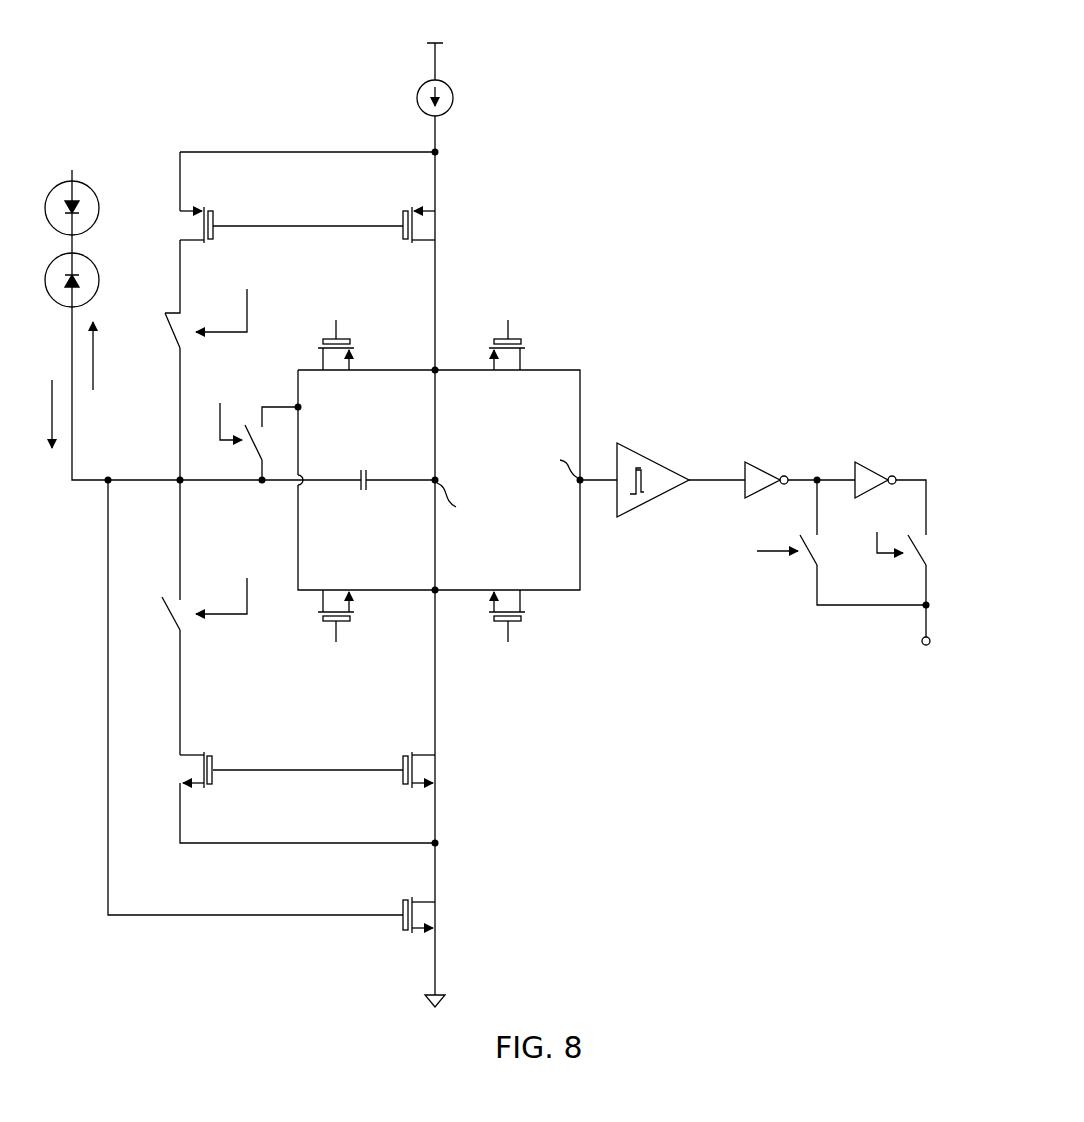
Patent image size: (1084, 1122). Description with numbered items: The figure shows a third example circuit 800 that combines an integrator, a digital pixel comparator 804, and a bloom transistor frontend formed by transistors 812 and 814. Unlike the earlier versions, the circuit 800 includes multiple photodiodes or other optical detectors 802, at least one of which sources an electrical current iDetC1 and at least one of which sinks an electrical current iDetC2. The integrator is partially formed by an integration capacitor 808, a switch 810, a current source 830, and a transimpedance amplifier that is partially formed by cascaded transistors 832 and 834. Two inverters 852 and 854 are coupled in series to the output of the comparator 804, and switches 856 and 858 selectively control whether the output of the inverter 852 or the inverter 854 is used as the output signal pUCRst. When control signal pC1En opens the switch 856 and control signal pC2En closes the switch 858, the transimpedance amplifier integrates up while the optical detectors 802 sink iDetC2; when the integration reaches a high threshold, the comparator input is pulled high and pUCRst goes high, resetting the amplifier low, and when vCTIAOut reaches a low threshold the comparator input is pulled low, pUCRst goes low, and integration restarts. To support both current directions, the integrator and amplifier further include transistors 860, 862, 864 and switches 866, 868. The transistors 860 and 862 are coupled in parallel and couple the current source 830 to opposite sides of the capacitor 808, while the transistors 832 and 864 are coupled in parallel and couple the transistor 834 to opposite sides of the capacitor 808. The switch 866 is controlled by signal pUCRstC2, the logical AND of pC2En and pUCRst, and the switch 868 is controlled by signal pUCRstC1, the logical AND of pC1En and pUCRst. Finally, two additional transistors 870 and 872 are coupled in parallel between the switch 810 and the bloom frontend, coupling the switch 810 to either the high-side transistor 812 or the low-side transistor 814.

The circuit 800 is at (814, 239).
The optical detectors 802 is at (86, 168).
The digital pixel comparator 804 is at (650, 456).
The integration capacitor 808 is at (364, 500).
The switch 810 is at (273, 437).
The transistor 812 is at (540, 343).
The transistor 814 is at (541, 617).
The current source 830 is at (458, 100).
The cascaded transistor 832 is at (441, 772).
The cascaded transistor 834 is at (441, 915).
The inverter 852 is at (765, 468).
The inverter 854 is at (874, 468).
The switch 856 is at (797, 565).
The switch 858 is at (913, 563).
The transistor 860 is at (225, 213).
The transistor 862 is at (442, 225).
The transistor 864 is at (225, 784).
The switch 866 is at (168, 303).
The switch 868 is at (189, 623).
The transistor 870 is at (339, 362).
The transistor 872 is at (336, 590).